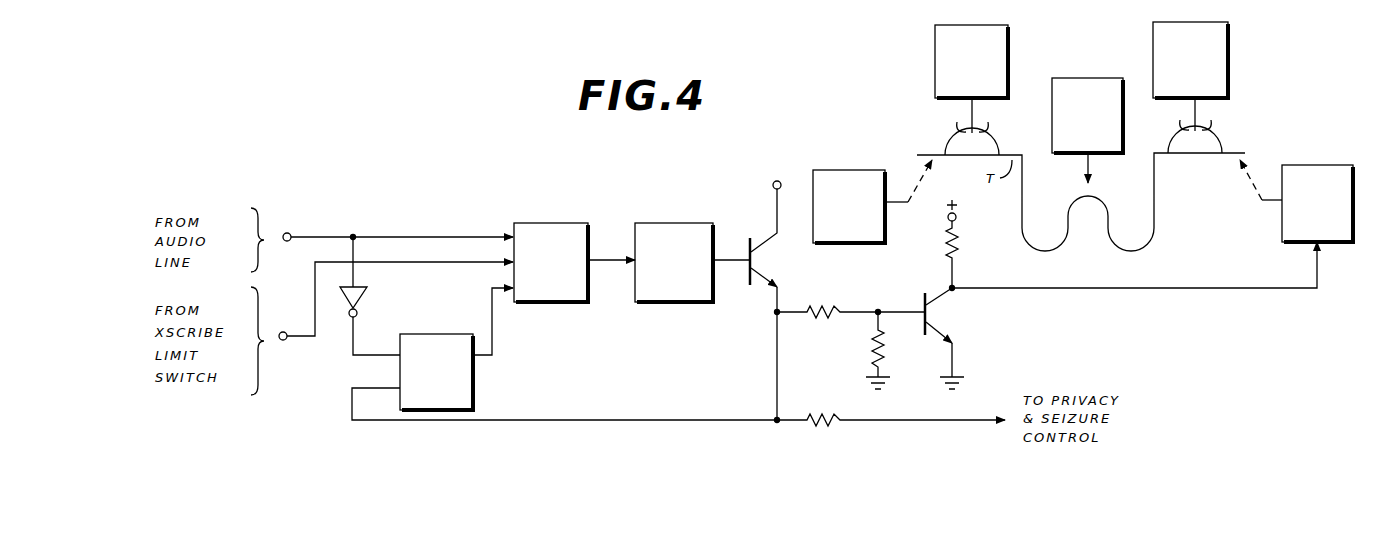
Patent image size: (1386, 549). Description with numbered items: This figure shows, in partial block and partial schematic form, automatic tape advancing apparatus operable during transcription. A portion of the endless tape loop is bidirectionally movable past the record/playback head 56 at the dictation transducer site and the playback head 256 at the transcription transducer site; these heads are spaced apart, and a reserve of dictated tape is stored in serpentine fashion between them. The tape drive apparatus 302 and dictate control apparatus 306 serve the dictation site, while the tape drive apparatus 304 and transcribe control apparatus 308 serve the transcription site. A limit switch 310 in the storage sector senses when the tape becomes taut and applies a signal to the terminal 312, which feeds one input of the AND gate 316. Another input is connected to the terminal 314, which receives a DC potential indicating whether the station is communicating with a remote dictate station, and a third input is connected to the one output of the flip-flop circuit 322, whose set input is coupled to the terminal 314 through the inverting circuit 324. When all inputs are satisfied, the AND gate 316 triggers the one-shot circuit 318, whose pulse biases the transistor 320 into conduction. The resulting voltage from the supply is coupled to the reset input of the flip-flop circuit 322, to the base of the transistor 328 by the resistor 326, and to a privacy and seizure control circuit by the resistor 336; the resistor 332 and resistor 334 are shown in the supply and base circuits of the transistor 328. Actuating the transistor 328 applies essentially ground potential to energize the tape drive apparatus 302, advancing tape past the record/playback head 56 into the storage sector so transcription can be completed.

The record/playback head 56 is at (1222, 140).
The playback head 256 is at (945, 145).
The tape drive apparatus 302 is at (1373, 140).
The tape drive apparatus 304 is at (858, 136).
The dictate control apparatus 306 is at (1230, 35).
The transcribe control apparatus 308 is at (935, 38).
The limit switch 310 is at (1098, 50).
The terminal 312 is at (284, 341).
The terminal 314 is at (290, 233).
The AND gate 316 is at (577, 194).
The one-shot circuit 318 is at (700, 194).
The transistor 320 is at (765, 268).
The flip-flop circuit 322 is at (473, 388).
The inverting circuit 324 is at (360, 298).
The resistor 326 is at (840, 318).
The transistor 328 is at (935, 320).
The resistor 332 is at (958, 247).
The resistor 334 is at (872, 352).
The resistor 336 is at (852, 390).